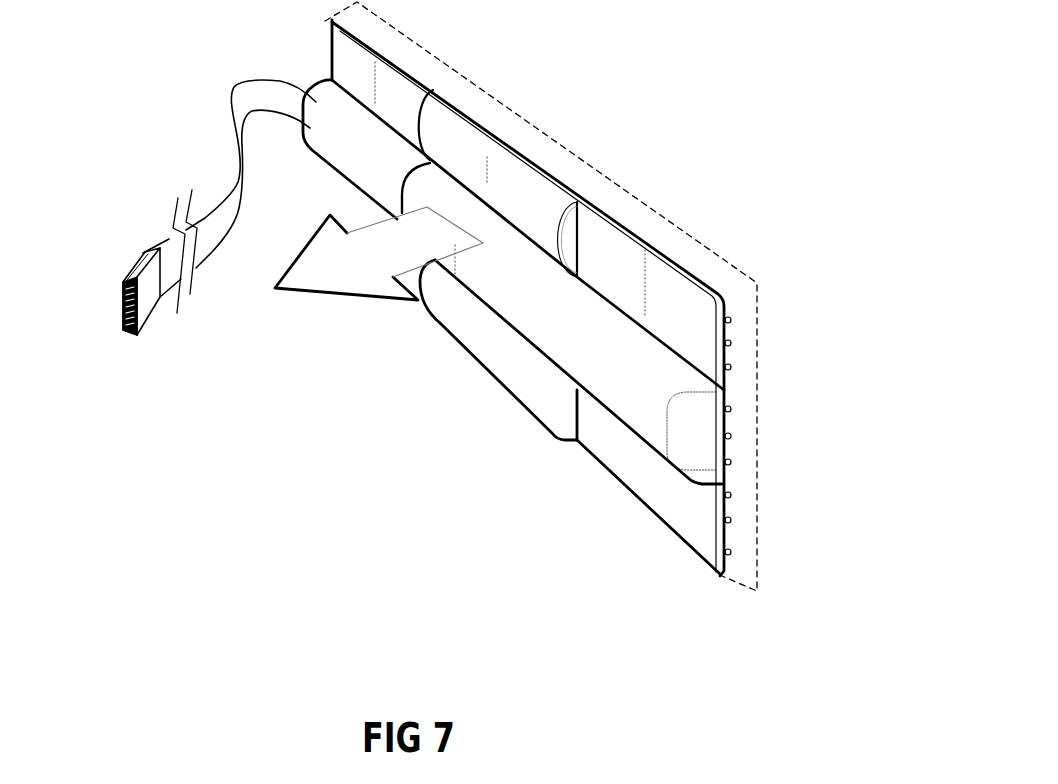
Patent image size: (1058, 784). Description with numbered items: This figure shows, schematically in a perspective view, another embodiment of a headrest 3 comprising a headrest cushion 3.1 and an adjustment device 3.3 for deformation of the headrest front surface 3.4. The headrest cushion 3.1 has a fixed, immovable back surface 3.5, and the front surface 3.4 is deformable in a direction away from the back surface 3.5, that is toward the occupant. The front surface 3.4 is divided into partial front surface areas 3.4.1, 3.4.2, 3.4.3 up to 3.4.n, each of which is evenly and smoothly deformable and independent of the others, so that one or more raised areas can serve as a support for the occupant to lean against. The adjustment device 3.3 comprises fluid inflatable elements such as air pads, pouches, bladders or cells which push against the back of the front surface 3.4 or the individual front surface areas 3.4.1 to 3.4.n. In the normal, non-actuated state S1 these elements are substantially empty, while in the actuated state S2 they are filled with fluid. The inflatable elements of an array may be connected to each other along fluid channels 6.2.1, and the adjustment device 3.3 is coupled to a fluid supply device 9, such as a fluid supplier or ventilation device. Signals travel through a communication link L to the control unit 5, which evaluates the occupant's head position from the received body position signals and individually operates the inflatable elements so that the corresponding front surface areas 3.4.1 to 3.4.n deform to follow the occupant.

The headrest 3 is at (580, 111).
The headrest cushion 3.1 is at (778, 343).
The adjustment device 3.3 is at (742, 517).
The front surface 3.4 is at (670, 310).
The first front surface area 3.4.1 is at (497, 177).
The second front surface area 3.4.2 is at (483, 310).
The third front surface area 3.4.3 is at (517, 378).
The n-th front surface area 3.4.n is at (348, 60).
The back surface 3.5 is at (670, 217).
The control unit 5 is at (124, 312).
The fluid supply device 9 is at (124, 286).
The non-actuated state S1 is at (343, 52).
The actuated state S2 is at (313, 101).
The communication link L is at (213, 193).
The fluid channel 6.2.1 is at (731, 318).